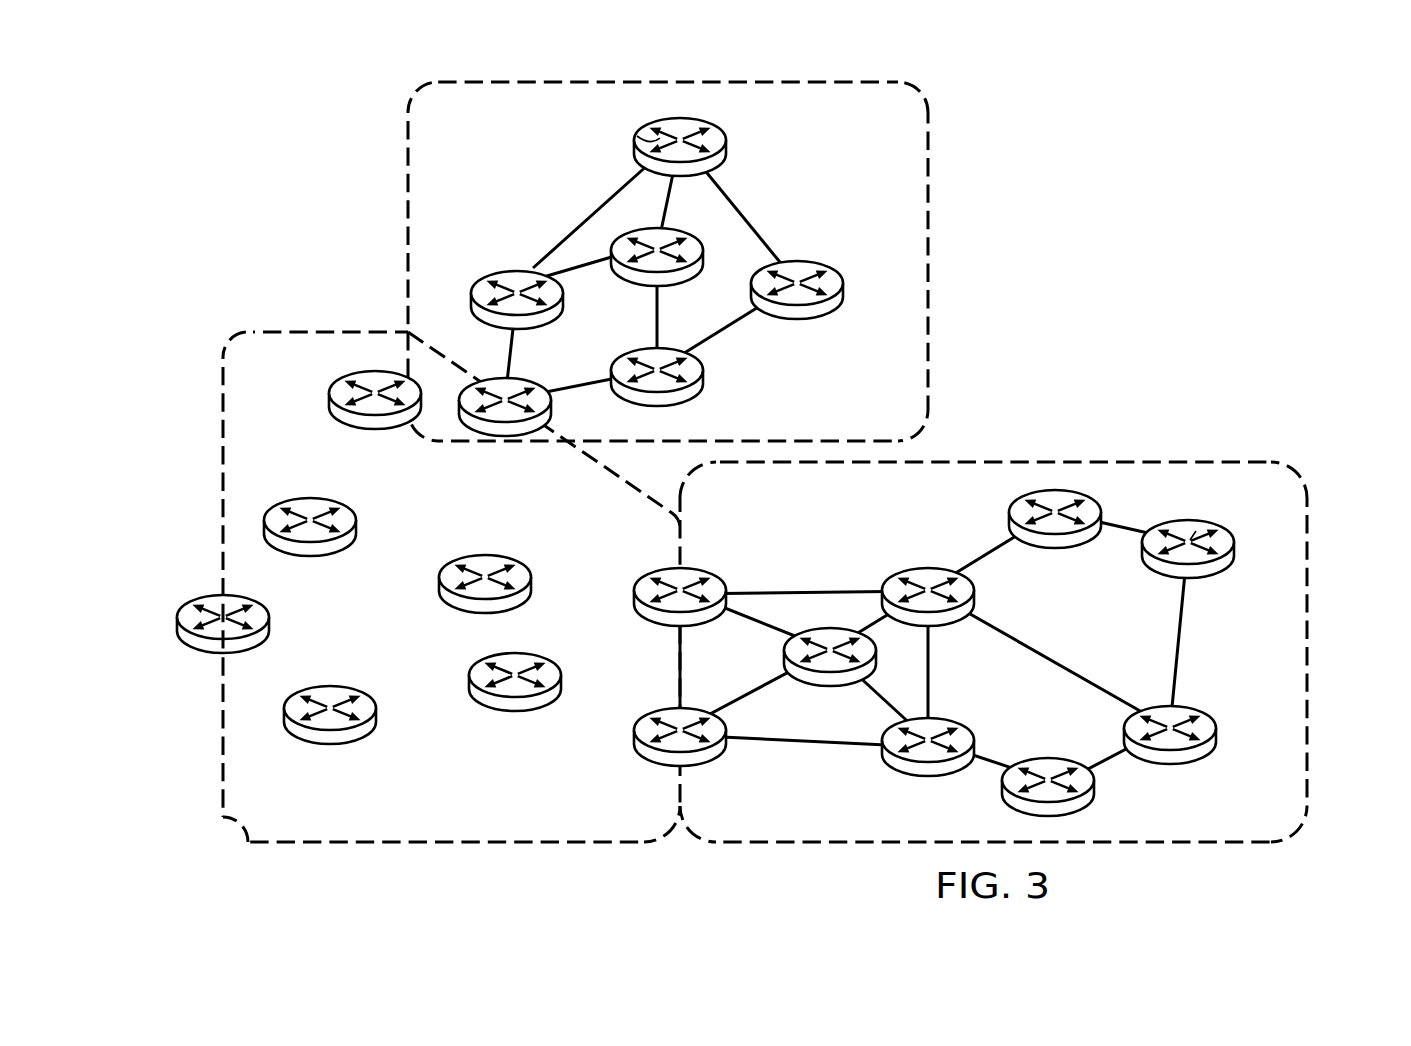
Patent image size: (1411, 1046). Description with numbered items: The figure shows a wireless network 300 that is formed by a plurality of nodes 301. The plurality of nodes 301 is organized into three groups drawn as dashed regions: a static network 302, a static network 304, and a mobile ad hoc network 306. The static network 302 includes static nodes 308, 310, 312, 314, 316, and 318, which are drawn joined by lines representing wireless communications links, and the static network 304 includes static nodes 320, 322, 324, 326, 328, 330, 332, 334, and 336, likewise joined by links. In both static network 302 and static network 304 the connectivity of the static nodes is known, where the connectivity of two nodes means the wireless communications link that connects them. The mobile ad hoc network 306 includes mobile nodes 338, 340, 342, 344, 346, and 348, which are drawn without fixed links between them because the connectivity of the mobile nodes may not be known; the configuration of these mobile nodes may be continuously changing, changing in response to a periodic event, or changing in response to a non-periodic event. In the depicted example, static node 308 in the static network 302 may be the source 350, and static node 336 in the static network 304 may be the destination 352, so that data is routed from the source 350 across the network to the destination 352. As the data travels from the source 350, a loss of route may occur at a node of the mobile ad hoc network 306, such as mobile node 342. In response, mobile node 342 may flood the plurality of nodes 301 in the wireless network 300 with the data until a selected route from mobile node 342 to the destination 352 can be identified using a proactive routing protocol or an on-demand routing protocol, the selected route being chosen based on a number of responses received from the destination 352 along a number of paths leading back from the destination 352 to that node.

The wireless network 300 is at (1102, 281).
The plurality of nodes 301 is at (1131, 494).
The static network 302 is at (579, 79).
The static network 304 is at (1311, 703).
The mobile ad hoc network 306 is at (220, 711).
The static node 308 is at (728, 138).
The static node 310 is at (632, 290).
The static node 312 is at (800, 261).
The static node 314 is at (704, 372).
The static node 316 is at (496, 275).
The static node 318 is at (486, 436).
The static node 320 is at (636, 598).
The static node 322 is at (636, 738).
The static node 324 is at (786, 661).
The static node 326 is at (958, 622).
The static node 328 is at (934, 777).
The static node 330 is at (1094, 789).
The static node 332 is at (1058, 549).
The static node 334 is at (1215, 740).
The static node 336 is at (1225, 572).
The mobile node 338 is at (329, 394).
The mobile node 340 is at (178, 628).
The mobile node 342 is at (311, 556).
The mobile node 344 is at (331, 745).
The mobile node 346 is at (440, 593).
The mobile node 348 is at (516, 711).
The source 350 is at (637, 136).
The destination 352 is at (1196, 531).